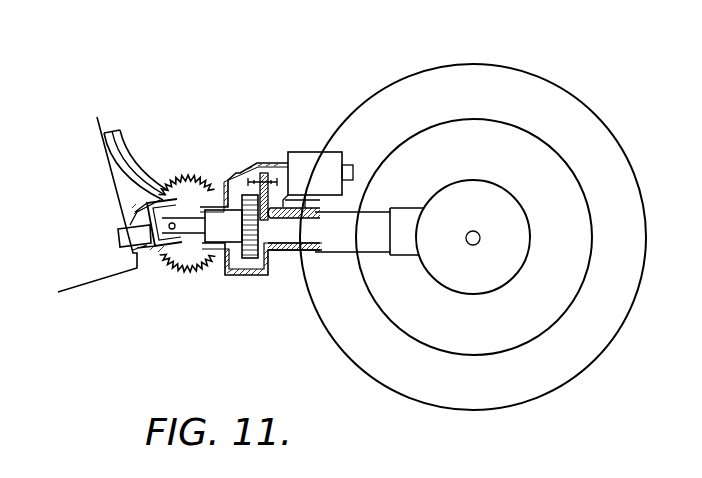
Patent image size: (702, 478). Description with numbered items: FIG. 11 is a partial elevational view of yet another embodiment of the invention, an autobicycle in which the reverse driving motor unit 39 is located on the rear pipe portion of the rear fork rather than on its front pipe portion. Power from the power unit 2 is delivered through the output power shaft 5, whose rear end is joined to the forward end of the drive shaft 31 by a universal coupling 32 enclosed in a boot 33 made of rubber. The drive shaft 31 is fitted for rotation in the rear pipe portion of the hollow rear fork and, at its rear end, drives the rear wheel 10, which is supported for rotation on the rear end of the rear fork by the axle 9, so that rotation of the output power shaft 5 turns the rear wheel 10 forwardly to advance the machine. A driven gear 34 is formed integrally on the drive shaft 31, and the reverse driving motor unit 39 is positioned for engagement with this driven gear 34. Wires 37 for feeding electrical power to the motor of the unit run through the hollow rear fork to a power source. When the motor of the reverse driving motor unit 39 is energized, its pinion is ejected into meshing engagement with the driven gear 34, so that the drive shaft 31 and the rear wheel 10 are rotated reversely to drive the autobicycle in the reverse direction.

The power unit 2 is at (92, 267).
The output power shaft 5 is at (128, 236).
The axle 9 is at (478, 244).
The rear wheel 10 is at (572, 105).
The drive shaft 31 is at (288, 228).
The universal coupling 32 is at (163, 262).
The boot 33 is at (183, 175).
The driven gear 34 is at (248, 270).
The wires 37 is at (140, 178).
The reverse driving motor unit 39 is at (315, 172).